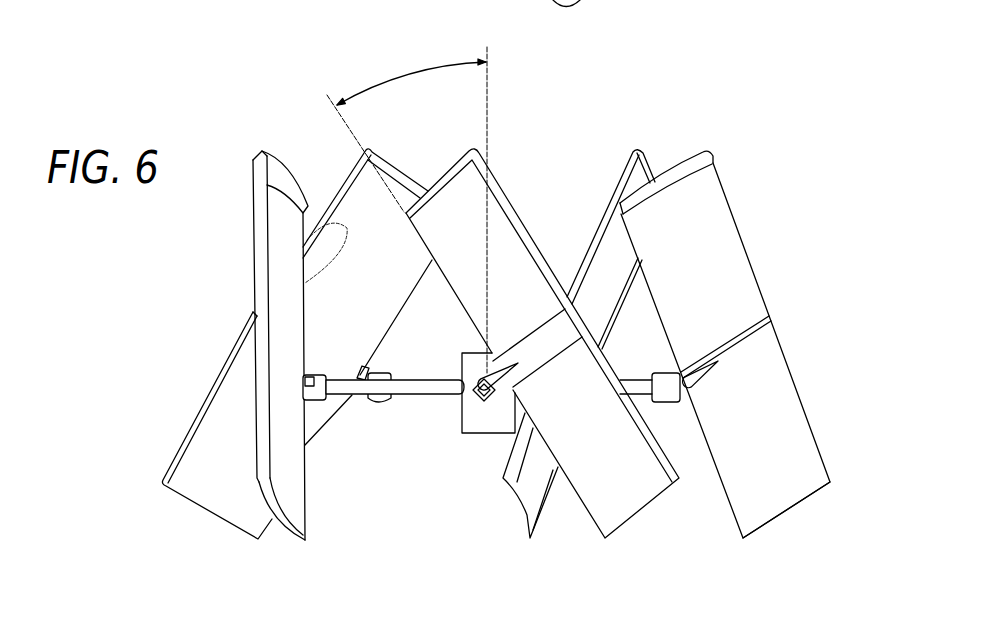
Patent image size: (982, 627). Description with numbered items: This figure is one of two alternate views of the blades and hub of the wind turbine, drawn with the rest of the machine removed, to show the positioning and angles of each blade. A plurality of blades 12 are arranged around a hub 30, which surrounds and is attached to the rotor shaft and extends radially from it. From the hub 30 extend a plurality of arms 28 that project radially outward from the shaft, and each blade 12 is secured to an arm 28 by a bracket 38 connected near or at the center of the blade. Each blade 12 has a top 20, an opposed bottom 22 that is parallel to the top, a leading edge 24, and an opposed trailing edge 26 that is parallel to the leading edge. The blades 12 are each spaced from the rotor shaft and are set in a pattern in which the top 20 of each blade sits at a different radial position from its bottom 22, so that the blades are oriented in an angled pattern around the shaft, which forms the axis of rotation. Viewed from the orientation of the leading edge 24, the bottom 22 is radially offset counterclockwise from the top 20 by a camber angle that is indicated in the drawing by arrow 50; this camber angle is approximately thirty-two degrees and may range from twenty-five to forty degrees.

The blade 12 is at (713, 270).
The top 20 is at (682, 172).
The bottom 22 is at (798, 510).
The leading edge 24 is at (343, 192).
The trailing edge 26 is at (263, 226).
The arm 28 is at (417, 394).
The hub 30 is at (478, 424).
The bracket 38 is at (765, 330).
The arrow 50 is at (403, 72).